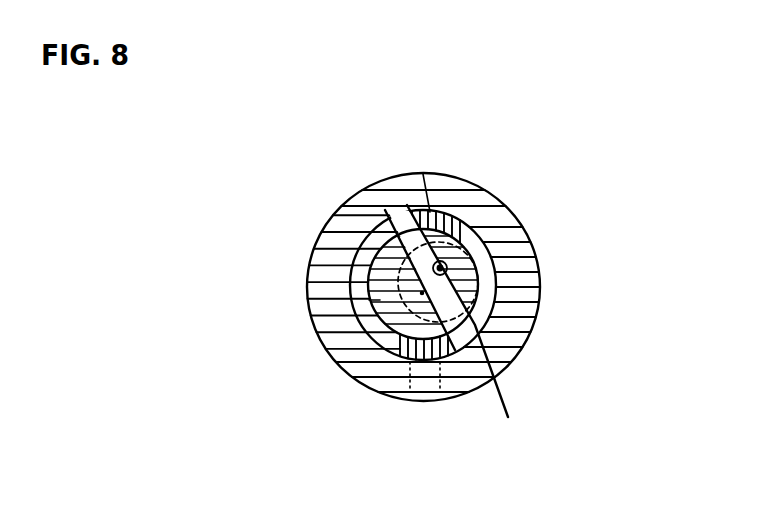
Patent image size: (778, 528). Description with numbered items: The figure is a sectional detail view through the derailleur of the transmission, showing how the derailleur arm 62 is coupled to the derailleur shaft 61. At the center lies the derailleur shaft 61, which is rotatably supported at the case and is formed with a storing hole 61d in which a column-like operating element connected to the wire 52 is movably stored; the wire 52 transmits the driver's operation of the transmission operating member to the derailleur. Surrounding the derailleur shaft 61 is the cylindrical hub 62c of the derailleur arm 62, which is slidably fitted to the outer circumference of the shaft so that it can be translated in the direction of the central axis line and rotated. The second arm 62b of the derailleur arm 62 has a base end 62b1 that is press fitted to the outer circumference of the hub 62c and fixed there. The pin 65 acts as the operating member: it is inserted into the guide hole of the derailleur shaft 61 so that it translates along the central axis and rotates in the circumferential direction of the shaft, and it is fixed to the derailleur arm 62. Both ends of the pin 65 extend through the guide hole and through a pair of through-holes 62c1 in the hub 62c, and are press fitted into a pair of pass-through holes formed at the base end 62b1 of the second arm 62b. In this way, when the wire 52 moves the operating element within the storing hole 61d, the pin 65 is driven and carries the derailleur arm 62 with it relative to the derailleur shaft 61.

The wire 52 is at (463, 252).
The derailleur shaft 61 is at (390, 312).
The storing hole 61d is at (368, 302).
The derailleur arm 62 is at (543, 239).
The second arm 62b is at (527, 302).
The base end of the second arm 62b1 is at (374, 205).
The cylindrical hub 62c is at (398, 368).
The through-holes 62c1 is at (372, 246).
The pin 65 is at (348, 203).